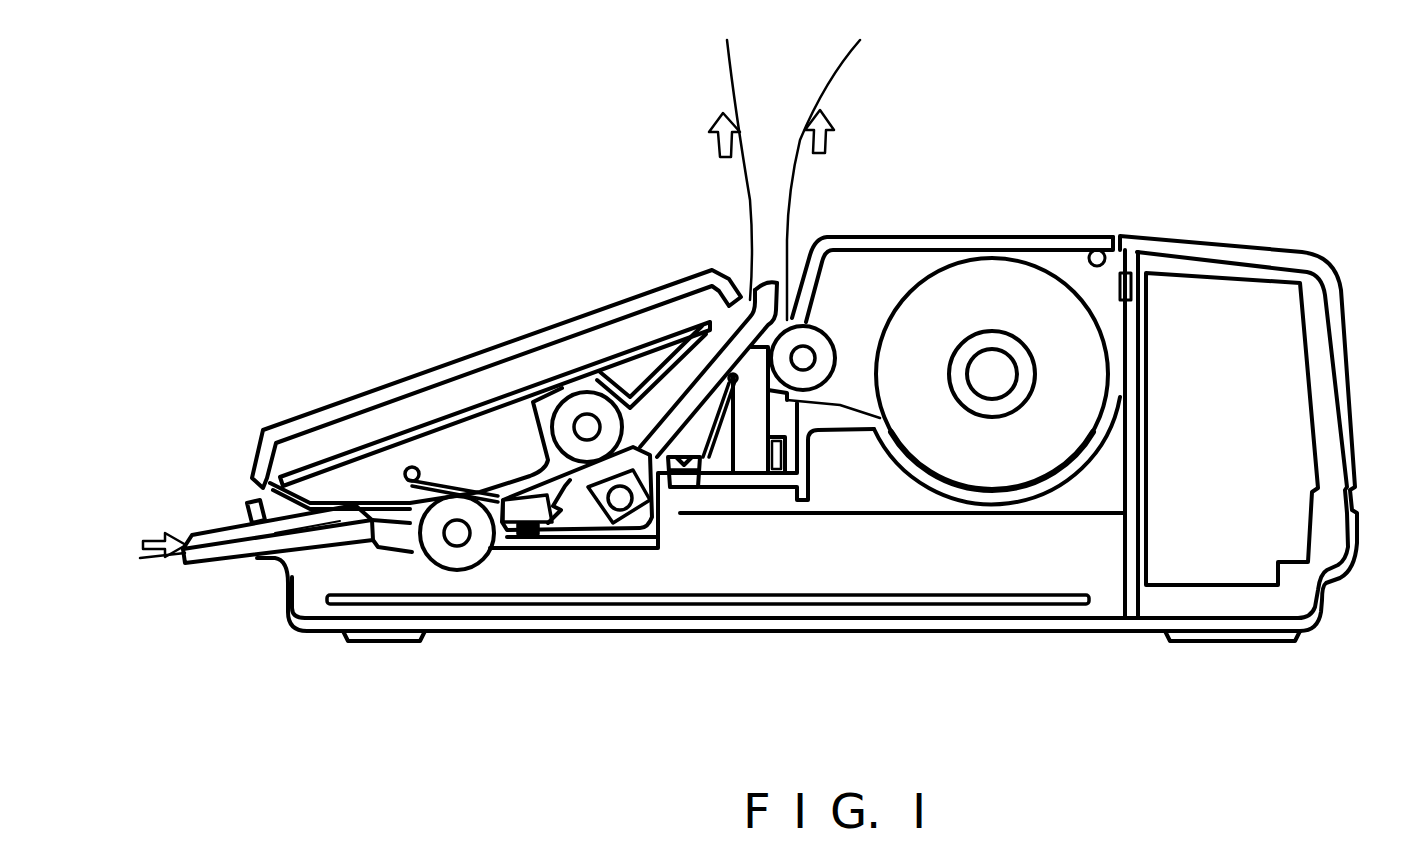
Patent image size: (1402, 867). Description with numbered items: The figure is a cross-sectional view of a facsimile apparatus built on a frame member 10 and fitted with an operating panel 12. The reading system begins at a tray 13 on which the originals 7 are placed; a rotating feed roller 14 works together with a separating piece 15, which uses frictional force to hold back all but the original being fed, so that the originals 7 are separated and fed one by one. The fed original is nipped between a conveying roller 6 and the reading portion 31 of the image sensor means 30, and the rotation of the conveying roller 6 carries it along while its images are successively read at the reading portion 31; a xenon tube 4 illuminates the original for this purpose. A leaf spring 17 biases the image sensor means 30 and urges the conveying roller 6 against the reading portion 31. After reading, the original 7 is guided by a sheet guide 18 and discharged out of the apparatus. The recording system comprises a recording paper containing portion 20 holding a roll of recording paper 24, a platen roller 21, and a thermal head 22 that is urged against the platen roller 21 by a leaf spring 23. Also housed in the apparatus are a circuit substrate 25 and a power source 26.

The xenon tube 4 is at (613, 540).
The conveying roller 6 is at (577, 407).
The originals 7 is at (737, 63).
The frame member 10 is at (1040, 631).
The operating panel 12 is at (303, 418).
The tray 13 is at (213, 535).
The feed roller 14 is at (457, 570).
The separating piece 15 is at (425, 483).
The leaf spring 17 is at (640, 540).
The sheet guide 18 is at (733, 350).
The recording paper containing portion 20 is at (1060, 260).
The platen roller 21 is at (822, 333).
The thermal head 22 is at (750, 463).
The leaf spring 23 is at (715, 457).
The roll of recording paper 24 is at (983, 283).
The circuit substrate 25 is at (1004, 598).
The power source 26 is at (1212, 294).
The image sensor means 30 is at (537, 557).
The reading portion 31 is at (578, 545).